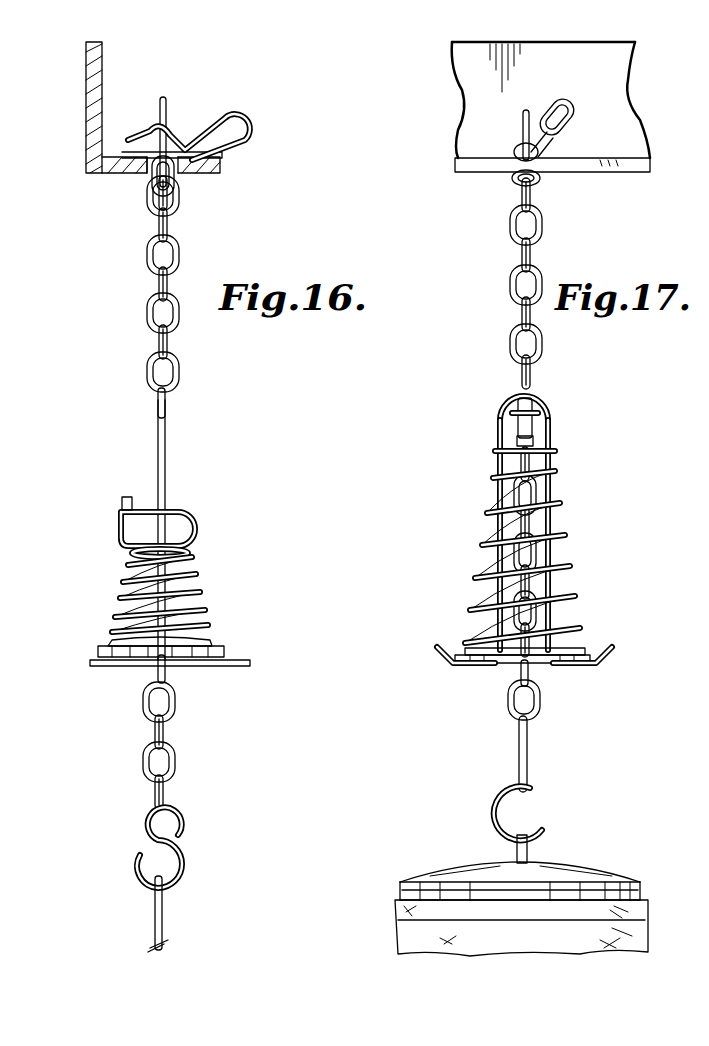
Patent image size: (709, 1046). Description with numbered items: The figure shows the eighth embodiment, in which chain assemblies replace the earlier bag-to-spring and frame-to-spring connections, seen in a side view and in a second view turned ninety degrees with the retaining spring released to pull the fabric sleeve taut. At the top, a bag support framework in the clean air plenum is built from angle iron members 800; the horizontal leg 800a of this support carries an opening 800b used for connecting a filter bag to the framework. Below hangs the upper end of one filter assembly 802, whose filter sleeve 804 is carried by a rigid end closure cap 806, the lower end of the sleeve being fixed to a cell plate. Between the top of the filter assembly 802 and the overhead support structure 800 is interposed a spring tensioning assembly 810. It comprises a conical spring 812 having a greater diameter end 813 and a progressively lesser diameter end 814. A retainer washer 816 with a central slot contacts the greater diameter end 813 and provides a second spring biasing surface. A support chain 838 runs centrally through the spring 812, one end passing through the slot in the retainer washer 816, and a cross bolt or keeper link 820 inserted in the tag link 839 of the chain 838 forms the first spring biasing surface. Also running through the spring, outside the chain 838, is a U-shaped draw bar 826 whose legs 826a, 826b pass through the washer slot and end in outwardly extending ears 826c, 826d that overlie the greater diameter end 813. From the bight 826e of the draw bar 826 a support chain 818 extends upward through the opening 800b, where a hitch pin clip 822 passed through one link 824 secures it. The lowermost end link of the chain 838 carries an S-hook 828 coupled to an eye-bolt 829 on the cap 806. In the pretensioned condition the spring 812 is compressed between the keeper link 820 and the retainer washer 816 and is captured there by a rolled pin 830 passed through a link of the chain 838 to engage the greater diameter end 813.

In FIG. 16, the angle iron member 800 is at (78, 90).
In FIG. 17, the angle iron member 800 is at (457, 96).
In FIG. 16, the horizontal leg 800a is at (222, 165).
In FIG. 17, the horizontal leg 800a is at (570, 168).
In FIG. 16, the opening 800b is at (150, 178).
In FIG. 16, the filter assembly 802 is at (190, 952).
In FIG. 17, the filter assembly 802 is at (576, 864).
In FIG. 17, the filter sleeve 804 is at (396, 936).
In FIG. 17, the end closure cap 806 is at (466, 872).
In FIG. 16, the spring tensioning assembly 810 is at (258, 596).
In FIG. 17, the spring tensioning assembly 810 is at (646, 508).
In FIG. 16, the conical spring 812 is at (125, 598).
In FIG. 17, the conical spring 812 is at (478, 568).
In FIG. 16, the greater diameter end 813 is at (106, 650).
In FIG. 17, the greater diameter end 813 is at (468, 650).
In FIG. 16, the lesser diameter end 814 is at (130, 555).
In FIG. 17, the lesser diameter end 814 is at (492, 452).
In FIG. 16, the retainer washer 816 is at (224, 652).
In FIG. 17, the retainer washer 816 is at (586, 652).
In FIG. 16, the support chain 818 is at (180, 254).
In FIG. 17, the support chain 818 is at (544, 230).
In FIG. 16, the cross bolt or keeper link 820 is at (200, 525).
In FIG. 17, the cross bolt or keeper link 820 is at (538, 424).
In FIG. 16, the hitch pin clip 822 is at (240, 116).
In FIG. 17, the hitch pin clip 822 is at (522, 126).
In FIG. 16, the link 824 is at (180, 182).
In FIG. 17, the link 824 is at (516, 183).
In FIG. 17, the draw bar 826 is at (552, 486).
In FIG. 16, the leg 826a is at (165, 468).
In FIG. 17, the leg 826a is at (496, 500).
In FIG. 17, the leg 826b is at (552, 515).
In FIG. 16, the outwardly extending ear 826c is at (155, 668).
In FIG. 17, the outwardly extending ear 826c is at (460, 668).
In FIG. 17, the outwardly extending ear 826d is at (582, 668).
In FIG. 16, the bight 826e is at (172, 390).
In FIG. 17, the bight 826e is at (530, 388).
In FIG. 16, the S-hook 828 is at (180, 816).
In FIG. 17, the S-hook 828 is at (530, 752).
In FIG. 16, the eye-bolt 829 is at (155, 910).
In FIG. 17, the eye-bolt 829 is at (550, 790).
In FIG. 16, the rolled pin 830 is at (250, 666).
In FIG. 16, the support chain 838 is at (180, 754).
In FIG. 17, the support chain 838 is at (544, 716).
In FIG. 17, the tag link 839 is at (540, 440).